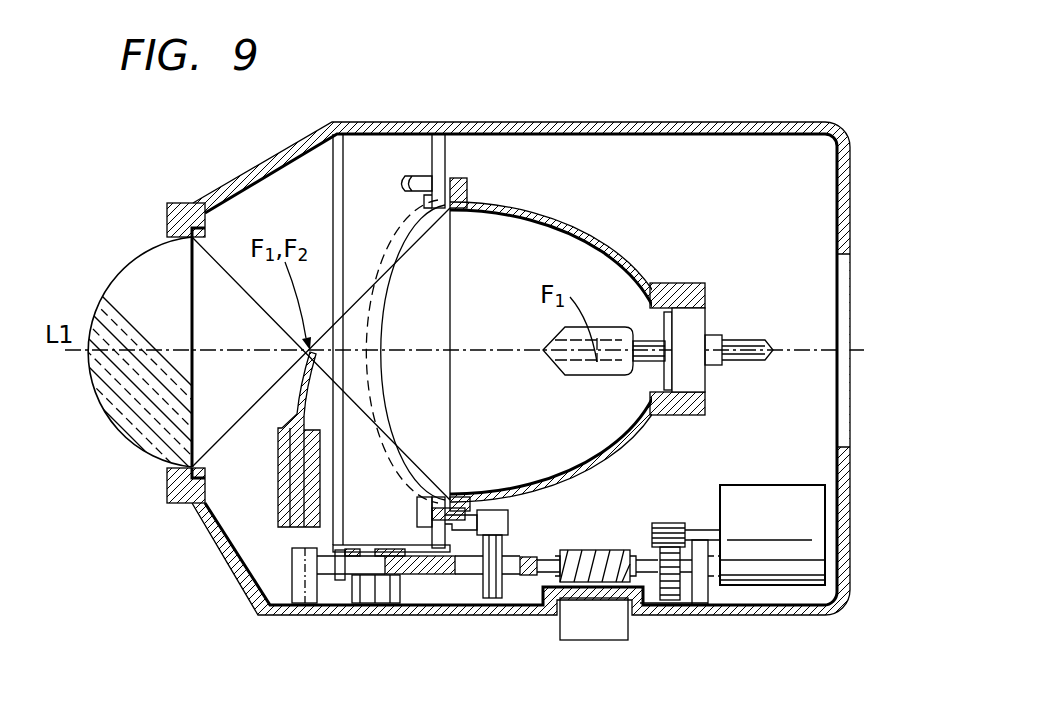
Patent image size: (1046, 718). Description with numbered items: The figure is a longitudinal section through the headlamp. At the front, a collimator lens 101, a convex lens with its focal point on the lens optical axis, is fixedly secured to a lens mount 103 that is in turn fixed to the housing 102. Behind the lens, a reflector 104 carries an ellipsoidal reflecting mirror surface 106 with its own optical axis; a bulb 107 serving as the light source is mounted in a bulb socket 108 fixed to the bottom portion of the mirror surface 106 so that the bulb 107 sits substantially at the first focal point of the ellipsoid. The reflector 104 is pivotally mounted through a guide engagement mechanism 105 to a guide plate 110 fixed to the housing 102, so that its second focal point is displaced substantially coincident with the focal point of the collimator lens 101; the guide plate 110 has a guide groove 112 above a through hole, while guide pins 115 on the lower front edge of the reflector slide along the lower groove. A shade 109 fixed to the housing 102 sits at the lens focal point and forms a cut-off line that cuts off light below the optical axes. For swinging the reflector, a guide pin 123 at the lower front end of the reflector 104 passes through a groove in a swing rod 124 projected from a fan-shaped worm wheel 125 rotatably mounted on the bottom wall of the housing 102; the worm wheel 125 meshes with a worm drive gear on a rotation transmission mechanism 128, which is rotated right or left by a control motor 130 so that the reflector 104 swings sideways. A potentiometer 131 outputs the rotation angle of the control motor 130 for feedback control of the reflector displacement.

The collimator lens 101 is at (103, 394).
The housing 102 is at (722, 122).
The lens mount 103 is at (180, 202).
The reflector 104 is at (607, 238).
The guide engagement mechanism 105 is at (465, 150).
The ellipsoidal reflecting mirror surface 106 is at (548, 236).
The bulb 107 is at (662, 320).
The bulb socket 108 is at (693, 323).
The shade 109 is at (298, 398).
The guide plate 110 is at (448, 148).
The guide groove 112 is at (420, 173).
The guide pins 115 is at (417, 507).
The guide pin 123 is at (493, 593).
The swing rod 124 is at (358, 600).
The fan-shaped worm wheel 125 is at (340, 582).
The rotation transmission mechanism 128 is at (680, 505).
The control motor 130 is at (768, 492).
The potentiometer 131 is at (620, 633).